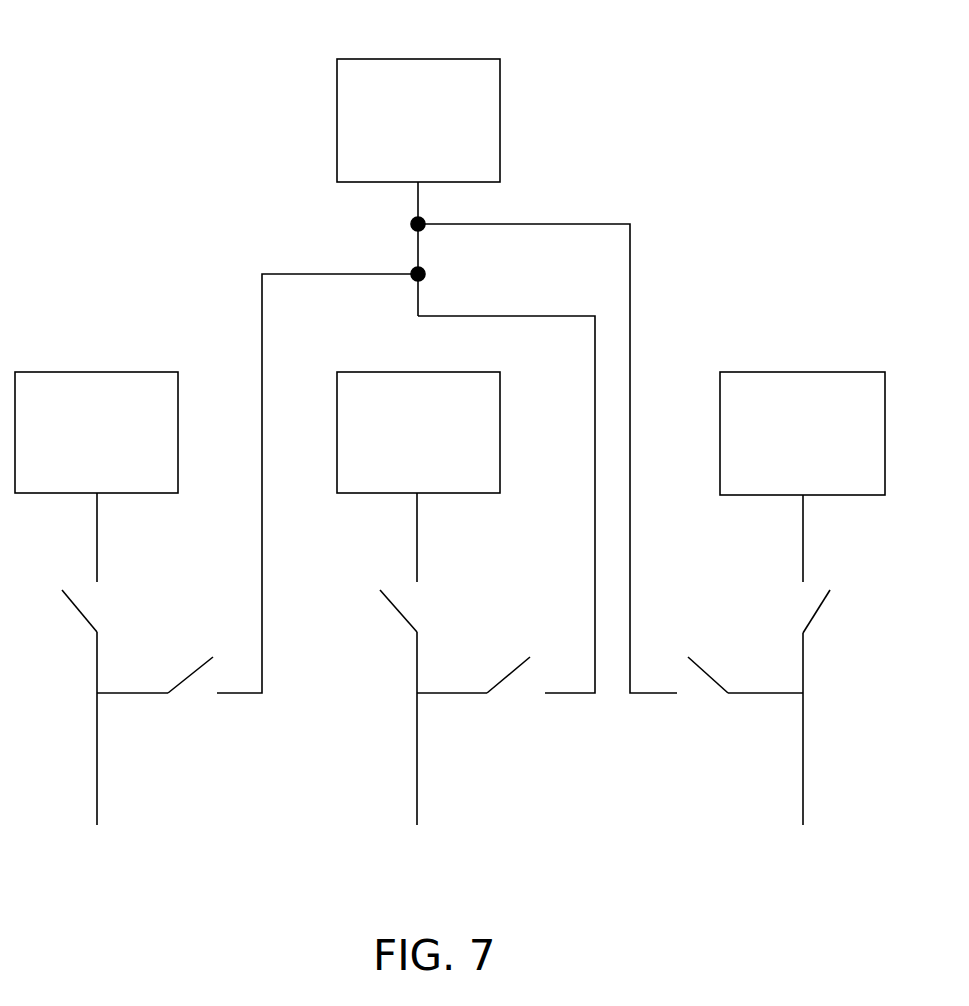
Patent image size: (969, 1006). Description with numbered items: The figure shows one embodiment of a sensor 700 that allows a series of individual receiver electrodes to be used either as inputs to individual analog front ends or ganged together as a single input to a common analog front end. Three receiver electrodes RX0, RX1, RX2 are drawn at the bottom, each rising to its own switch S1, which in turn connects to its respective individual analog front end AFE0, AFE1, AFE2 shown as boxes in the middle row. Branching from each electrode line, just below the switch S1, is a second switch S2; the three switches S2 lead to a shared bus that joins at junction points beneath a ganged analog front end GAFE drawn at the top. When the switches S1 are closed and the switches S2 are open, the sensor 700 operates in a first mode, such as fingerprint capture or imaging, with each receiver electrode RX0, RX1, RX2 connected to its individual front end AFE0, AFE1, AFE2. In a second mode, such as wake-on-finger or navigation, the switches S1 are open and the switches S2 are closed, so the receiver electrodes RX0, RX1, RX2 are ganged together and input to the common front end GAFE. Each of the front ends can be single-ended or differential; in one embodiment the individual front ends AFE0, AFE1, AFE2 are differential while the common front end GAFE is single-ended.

The sensor 700 is at (186, 92).
The ganged analog front end GAFE is at (418, 120).
The individual analog front end AFE0 is at (96, 477).
The individual analog front end AFE1 is at (418, 477).
The individual analog front end AFE2 is at (802, 477).
The switch S1 is at (432, 641).
The switch S2 is at (450, 694).
The receiver electrode RX0 is at (100, 779).
The receiver electrode RX1 is at (415, 780).
The receiver electrode RX2 is at (805, 781).